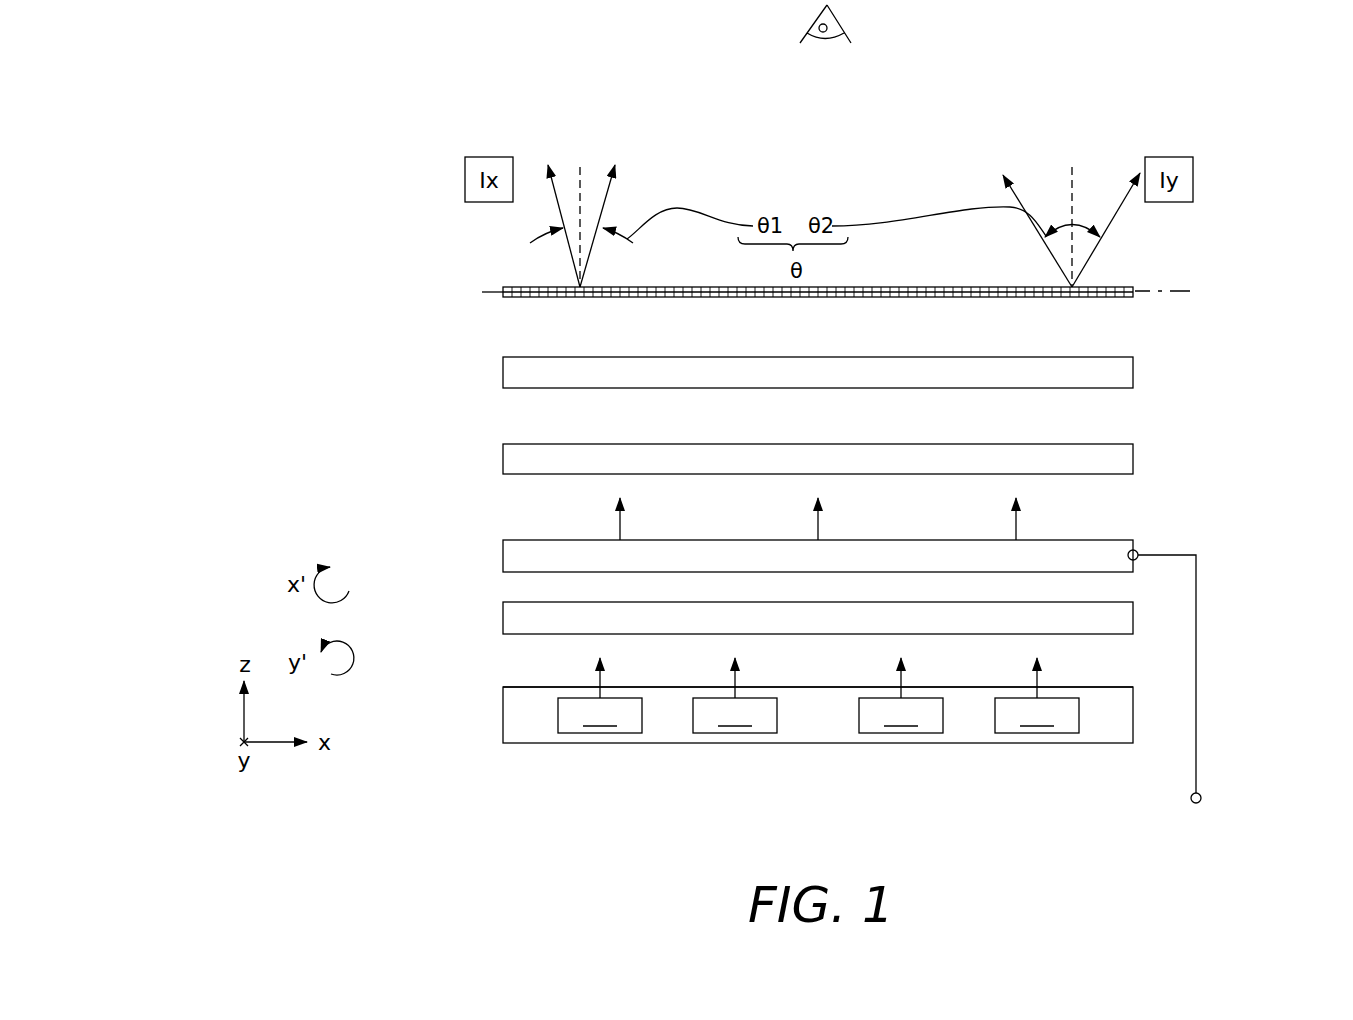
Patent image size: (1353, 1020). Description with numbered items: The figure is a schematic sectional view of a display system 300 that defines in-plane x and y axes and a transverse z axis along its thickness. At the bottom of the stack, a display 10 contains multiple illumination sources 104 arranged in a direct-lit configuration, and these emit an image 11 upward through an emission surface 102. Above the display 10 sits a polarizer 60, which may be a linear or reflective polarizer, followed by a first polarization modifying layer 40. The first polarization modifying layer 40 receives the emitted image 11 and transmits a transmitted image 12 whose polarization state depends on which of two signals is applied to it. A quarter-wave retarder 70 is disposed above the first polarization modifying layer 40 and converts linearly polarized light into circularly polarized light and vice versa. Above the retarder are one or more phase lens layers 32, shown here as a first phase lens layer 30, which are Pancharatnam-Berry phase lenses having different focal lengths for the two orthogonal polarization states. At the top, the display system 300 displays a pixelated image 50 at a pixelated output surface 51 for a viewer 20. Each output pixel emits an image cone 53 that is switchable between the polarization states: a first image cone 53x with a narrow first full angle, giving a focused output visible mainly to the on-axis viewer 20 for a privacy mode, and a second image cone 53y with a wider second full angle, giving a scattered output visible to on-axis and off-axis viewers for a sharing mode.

The display system 300 is at (352, 108).
The viewer 20 is at (848, 18).
The pixelated image 50 is at (525, 287).
The pixelated output surface 51 is at (1178, 291).
The image cone 53 is at (844, 196).
The first image cone 53x is at (625, 204).
The second image cone 53y is at (993, 198).
The phase lens layers 32 is at (517, 371).
The first phase lens layer 30 is at (762, 375).
The quarter-wave retarder 70 is at (517, 457).
The transmitted image 12 is at (618, 527).
The first polarization modifying layer 40 is at (520, 555).
The polarizer 60 is at (520, 618).
The emission surface 102 is at (518, 687).
The display 10 is at (520, 713).
The illumination source 104 is at (818, 715).
The image 11 is at (597, 685).